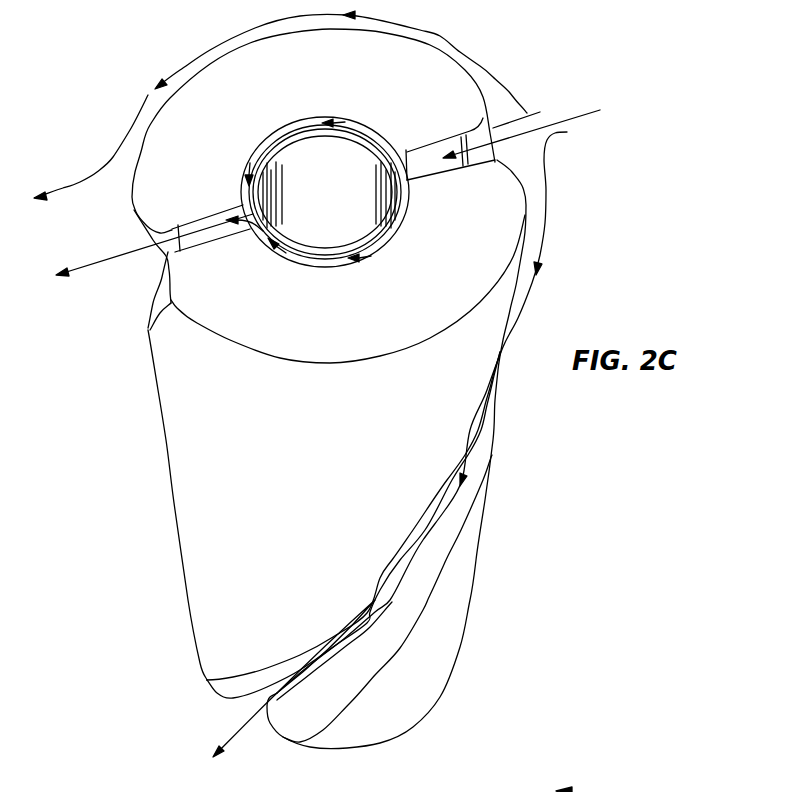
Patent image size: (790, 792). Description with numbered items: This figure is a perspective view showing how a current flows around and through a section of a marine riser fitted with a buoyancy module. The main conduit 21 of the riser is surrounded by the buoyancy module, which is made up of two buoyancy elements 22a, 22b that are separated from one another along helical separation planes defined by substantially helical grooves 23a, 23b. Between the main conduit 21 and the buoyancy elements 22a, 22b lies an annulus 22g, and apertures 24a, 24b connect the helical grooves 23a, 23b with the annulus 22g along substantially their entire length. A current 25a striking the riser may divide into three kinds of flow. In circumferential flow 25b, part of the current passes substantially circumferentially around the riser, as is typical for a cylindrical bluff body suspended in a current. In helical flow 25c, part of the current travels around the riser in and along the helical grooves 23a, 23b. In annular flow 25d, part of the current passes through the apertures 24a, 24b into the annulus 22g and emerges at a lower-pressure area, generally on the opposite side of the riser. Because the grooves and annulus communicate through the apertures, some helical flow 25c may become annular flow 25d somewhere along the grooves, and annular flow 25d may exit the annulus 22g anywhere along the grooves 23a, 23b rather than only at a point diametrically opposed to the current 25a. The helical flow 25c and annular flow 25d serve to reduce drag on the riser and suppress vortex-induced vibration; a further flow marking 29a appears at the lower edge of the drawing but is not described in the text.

The main conduit 21 is at (275, 145).
The buoyancy element 22a is at (306, 93).
The buoyancy element 22b is at (406, 308).
The annulus 22g is at (383, 246).
The helical groove 23a is at (500, 152).
The helical groove 23b is at (153, 231).
The aperture 24a is at (430, 147).
The aperture 24b is at (212, 215).
The current 25a is at (578, 111).
The circumferential flow 25b is at (437, 33).
The helical flow 25c is at (547, 218).
The annular flow 25d is at (553, 108).
The flow direction 29a is at (585, 787).